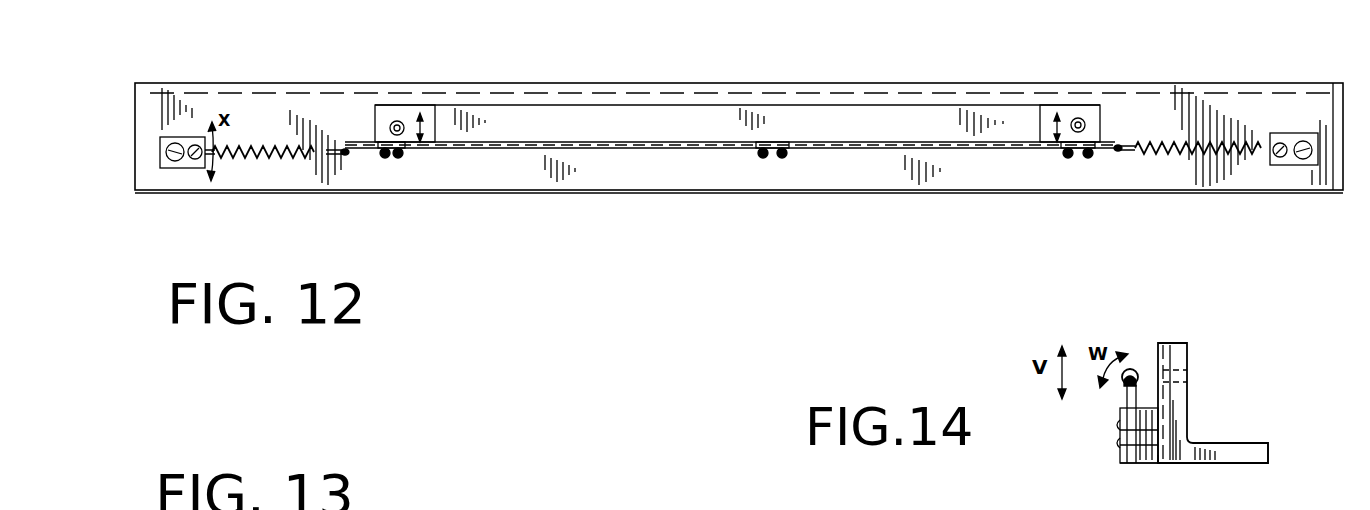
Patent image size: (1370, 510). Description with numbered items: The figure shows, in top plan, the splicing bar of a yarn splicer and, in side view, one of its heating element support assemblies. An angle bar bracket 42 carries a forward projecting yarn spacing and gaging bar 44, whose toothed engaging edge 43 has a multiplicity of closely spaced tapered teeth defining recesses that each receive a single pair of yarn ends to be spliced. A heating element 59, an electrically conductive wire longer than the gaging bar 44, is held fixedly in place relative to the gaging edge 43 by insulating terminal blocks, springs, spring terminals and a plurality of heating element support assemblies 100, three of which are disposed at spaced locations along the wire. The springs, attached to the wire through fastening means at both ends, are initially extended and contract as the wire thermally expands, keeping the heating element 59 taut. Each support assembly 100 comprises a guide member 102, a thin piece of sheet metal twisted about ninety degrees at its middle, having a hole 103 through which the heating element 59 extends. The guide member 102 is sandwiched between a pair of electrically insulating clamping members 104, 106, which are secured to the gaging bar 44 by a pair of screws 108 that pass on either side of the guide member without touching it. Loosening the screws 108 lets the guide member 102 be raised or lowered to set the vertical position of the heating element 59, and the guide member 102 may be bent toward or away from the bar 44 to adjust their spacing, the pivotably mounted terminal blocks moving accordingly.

In FIG. 12, the angle bar bracket 42 is at (272, 83).
In FIG. 12, the toothed engaging edge 43 is at (520, 142).
In FIG. 12, the yarn spacing and gaging bar 44 is at (772, 115).
In FIG. 14, the yarn spacing and gaging bar 44 is at (1228, 443).
In FIG. 12, the heating element 59 is at (655, 145).
In FIG. 14, the heating element 59 is at (1135, 368).
In FIG. 14, the heating element support assembly 100 is at (1198, 398).
In FIG. 14, the guide member 102 is at (1120, 412).
In FIG. 14, the hole 103 is at (1158, 368).
In FIG. 14, the clamping member 104 is at (1120, 465).
In FIG. 14, the clamping member 106 is at (1150, 465).
In FIG. 14, the screws 108 is at (1120, 442).